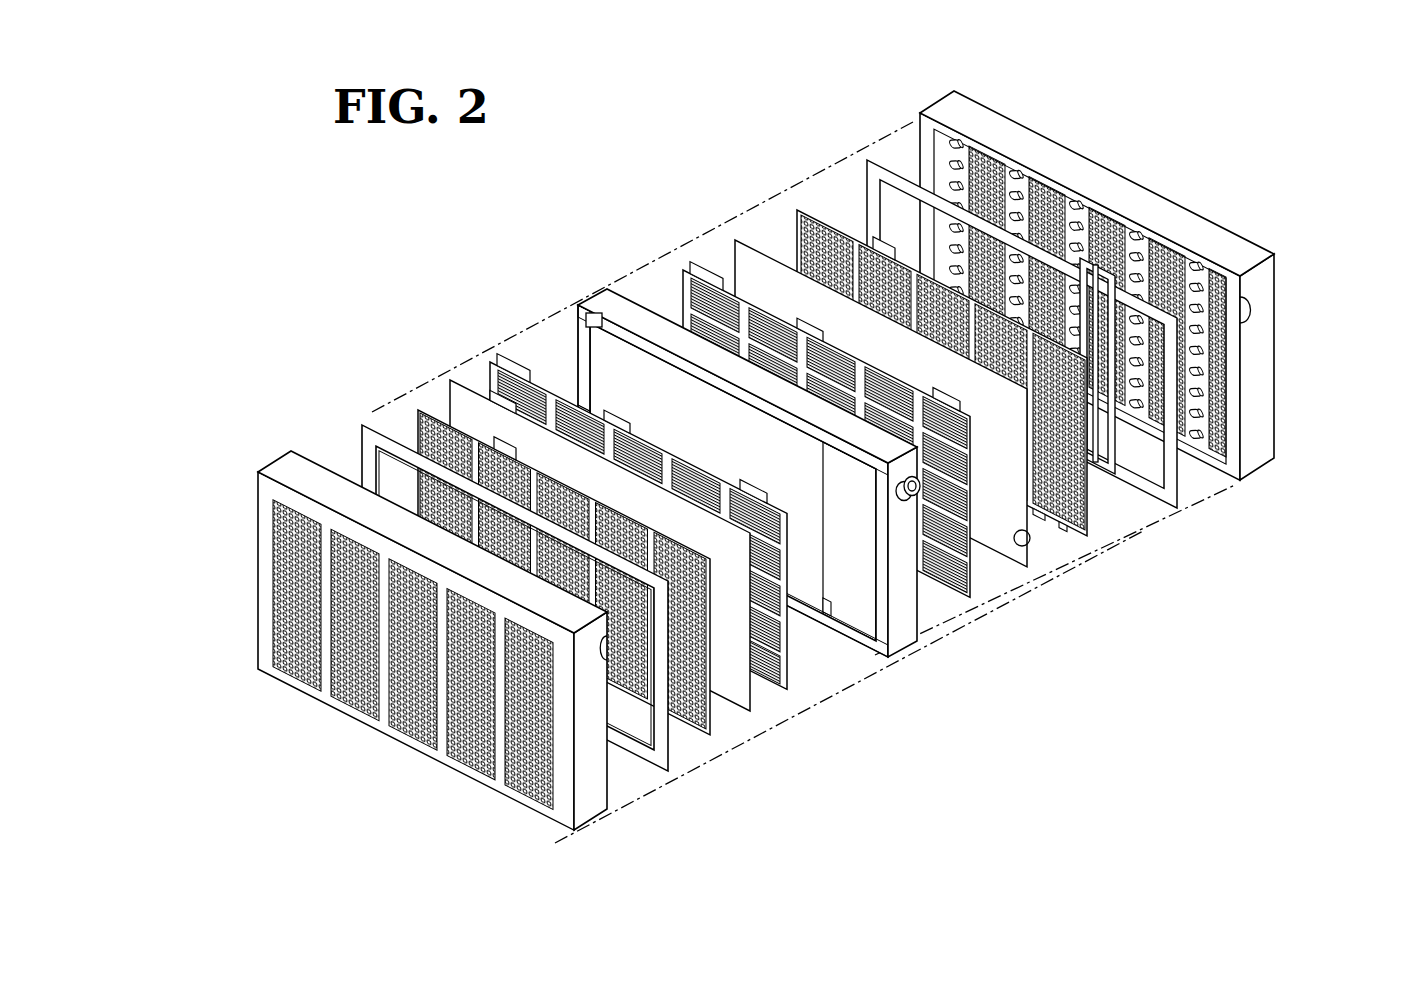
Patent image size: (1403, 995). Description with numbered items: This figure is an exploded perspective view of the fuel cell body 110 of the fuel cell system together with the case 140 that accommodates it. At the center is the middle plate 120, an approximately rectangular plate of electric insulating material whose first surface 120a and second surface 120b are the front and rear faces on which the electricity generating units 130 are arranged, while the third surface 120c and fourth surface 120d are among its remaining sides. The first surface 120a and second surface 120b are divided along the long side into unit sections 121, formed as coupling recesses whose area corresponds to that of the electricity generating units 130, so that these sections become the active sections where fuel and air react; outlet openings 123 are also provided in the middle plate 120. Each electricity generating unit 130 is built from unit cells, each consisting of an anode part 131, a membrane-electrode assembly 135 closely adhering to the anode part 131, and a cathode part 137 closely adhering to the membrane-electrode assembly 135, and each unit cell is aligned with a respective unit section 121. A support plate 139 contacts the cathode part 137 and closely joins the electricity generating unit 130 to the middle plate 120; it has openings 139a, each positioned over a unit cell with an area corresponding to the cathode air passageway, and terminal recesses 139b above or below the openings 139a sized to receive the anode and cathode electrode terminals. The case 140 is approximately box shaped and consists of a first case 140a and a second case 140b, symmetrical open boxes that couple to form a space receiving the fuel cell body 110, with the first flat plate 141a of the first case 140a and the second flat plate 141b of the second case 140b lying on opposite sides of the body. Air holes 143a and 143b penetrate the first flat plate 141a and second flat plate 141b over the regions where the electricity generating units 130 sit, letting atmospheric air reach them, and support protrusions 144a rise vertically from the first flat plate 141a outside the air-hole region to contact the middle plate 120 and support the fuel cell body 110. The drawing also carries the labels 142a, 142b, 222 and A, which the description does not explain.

The fuel cell body 110 is at (765, 437).
The middle plate 120 is at (735, 368).
The first surface 120a is at (583, 327).
The second surface 120b is at (670, 322).
The third surface 120c is at (572, 358).
The fourth surface 120d is at (913, 637).
The unit sections 121 is at (870, 620).
The outlet openings 123 is at (868, 497).
The electricity generating unit 130 is at (610, 582).
The anode part 131 is at (796, 700).
The membrane-electrode assembly 135 is at (760, 722).
The cathode part 137 is at (599, 600).
The support plate 139 is at (718, 437).
The openings 139a is at (718, 437).
The terminal recesses 139b is at (666, 437).
The case 140 is at (765, 437).
The first case 140a is at (1137, 240).
The second case 140b is at (413, 610).
The first flat plate 141a is at (1012, 120).
The second flat plate 141b is at (258, 608).
The end plate side face 142a is at (1276, 262).
The end plate top face 142b is at (308, 463).
The air holes 143a is at (1097, 301).
The air holes 143b is at (272, 533).
The support protrusions 144a is at (1138, 230).
The manifold port 222 is at (905, 503).
The detail region A is at (1030, 541).